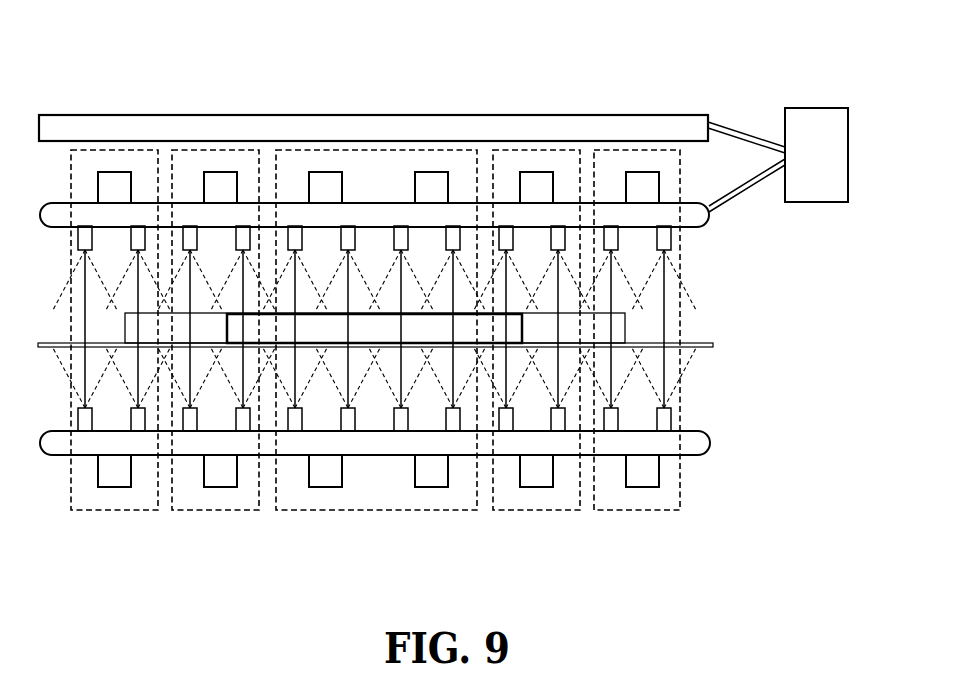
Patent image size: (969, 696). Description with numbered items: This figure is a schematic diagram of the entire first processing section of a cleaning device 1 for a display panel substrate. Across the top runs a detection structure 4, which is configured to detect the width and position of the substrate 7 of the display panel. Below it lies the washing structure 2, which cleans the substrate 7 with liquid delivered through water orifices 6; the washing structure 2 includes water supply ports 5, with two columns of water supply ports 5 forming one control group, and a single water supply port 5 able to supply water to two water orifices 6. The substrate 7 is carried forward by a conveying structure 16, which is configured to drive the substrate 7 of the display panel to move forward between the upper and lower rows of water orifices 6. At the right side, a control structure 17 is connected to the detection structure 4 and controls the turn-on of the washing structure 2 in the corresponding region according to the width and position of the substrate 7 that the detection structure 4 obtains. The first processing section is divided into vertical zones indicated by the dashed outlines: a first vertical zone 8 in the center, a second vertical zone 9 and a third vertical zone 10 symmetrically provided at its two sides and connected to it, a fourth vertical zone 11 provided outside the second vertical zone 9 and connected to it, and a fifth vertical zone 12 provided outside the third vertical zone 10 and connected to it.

The cleaning device 1 is at (375, 92).
The washing structure 2 is at (688, 430).
The detection structure 4 is at (63, 120).
The water supply port 5 is at (118, 187).
The water orifice 6 is at (242, 235).
The substrate 7 is at (487, 322).
The first vertical zone 8 is at (397, 490).
The second vertical zone 9 is at (547, 500).
The third vertical zone 10 is at (227, 500).
The fourth vertical zone 11 is at (660, 502).
The fifth vertical zone 12 is at (133, 500).
The conveying structure 16 is at (713, 345).
The control structure 17 is at (817, 108).